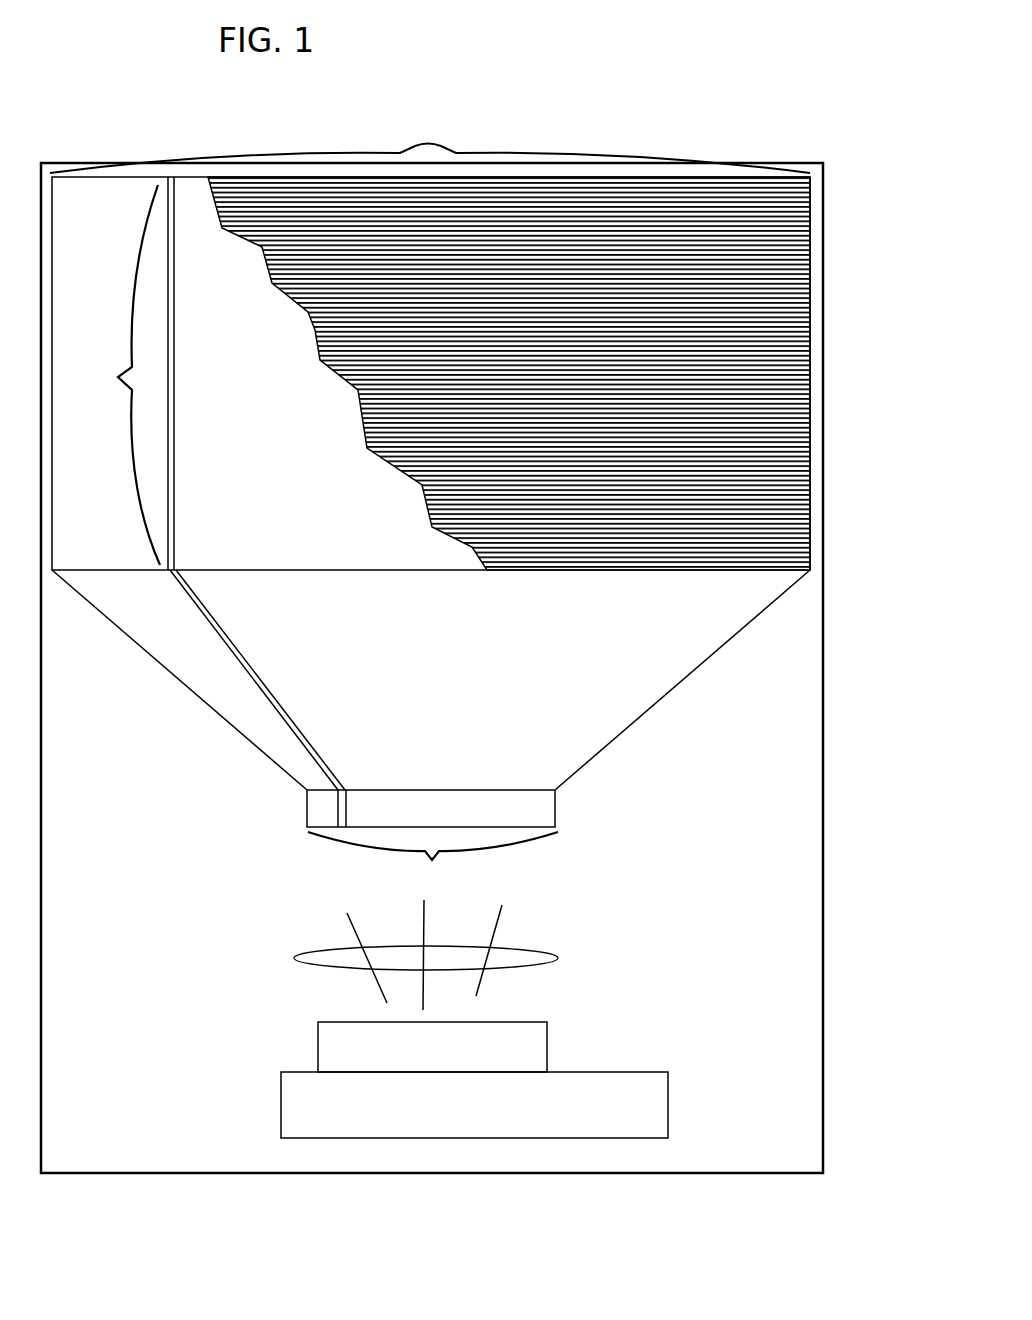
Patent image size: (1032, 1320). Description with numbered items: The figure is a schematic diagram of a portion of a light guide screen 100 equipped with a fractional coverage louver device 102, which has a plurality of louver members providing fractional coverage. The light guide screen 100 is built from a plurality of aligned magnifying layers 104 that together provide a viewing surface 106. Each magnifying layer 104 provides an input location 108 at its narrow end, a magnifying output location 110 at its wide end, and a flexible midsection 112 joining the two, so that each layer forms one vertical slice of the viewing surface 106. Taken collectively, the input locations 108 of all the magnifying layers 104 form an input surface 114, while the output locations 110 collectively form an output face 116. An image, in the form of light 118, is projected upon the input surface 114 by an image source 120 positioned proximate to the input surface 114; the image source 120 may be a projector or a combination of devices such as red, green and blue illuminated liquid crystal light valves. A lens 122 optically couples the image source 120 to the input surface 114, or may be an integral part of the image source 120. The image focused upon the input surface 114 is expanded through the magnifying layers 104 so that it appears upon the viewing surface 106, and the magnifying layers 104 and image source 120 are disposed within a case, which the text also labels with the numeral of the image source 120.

The light guide screen 100 is at (714, 126).
The fractional coverage louver device 102 is at (788, 435).
The magnifying layer 104 is at (181, 183).
The viewing surface 106 is at (802, 248).
The input location 108 is at (341, 830).
The magnifying output location 110 is at (116, 375).
The flexible midsection 112 is at (265, 683).
The input surface 114 is at (432, 841).
The output face 116 is at (430, 145).
The light 118 is at (500, 920).
The image source 120 is at (515, 1045).
The lens 122 is at (557, 950).